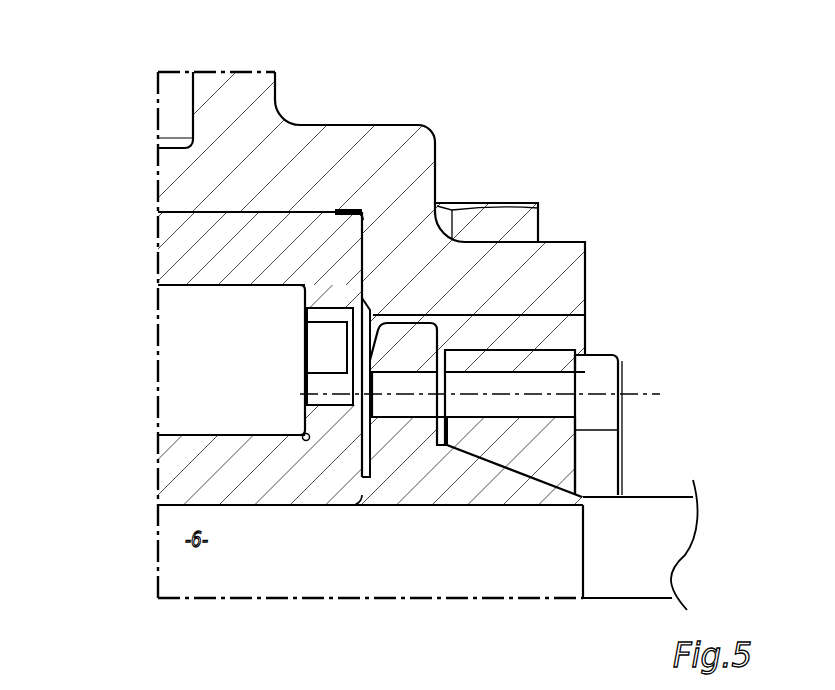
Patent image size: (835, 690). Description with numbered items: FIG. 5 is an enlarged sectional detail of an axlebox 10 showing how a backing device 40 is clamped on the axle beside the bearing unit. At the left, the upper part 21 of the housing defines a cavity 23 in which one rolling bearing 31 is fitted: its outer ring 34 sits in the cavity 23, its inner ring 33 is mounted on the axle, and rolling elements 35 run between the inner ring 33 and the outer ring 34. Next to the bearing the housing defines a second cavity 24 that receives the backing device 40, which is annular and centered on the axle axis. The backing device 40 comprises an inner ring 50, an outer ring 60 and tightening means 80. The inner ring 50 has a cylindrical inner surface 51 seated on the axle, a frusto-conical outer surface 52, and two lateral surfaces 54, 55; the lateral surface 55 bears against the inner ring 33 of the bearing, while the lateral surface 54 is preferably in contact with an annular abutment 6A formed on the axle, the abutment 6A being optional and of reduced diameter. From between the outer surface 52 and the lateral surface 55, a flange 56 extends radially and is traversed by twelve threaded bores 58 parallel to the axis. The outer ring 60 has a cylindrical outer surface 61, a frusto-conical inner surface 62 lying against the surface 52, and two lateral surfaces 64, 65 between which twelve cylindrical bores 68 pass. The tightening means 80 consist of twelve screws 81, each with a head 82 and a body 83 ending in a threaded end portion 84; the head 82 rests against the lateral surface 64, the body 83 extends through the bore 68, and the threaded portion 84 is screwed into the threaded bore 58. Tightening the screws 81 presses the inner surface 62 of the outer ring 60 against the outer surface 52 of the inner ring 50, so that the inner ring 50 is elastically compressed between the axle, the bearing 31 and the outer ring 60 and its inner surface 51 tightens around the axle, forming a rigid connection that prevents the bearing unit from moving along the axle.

The axlebox 10 is at (143, 106).
The upper part 21 is at (263, 132).
The cavity 23 is at (211, 215).
The outer ring 34 is at (175, 230).
The rolling elements 35 is at (188, 398).
The inner ring 33 is at (188, 468).
The rolling bearing 31 is at (142, 353).
The threaded end portion 84 is at (390, 407).
The flange 56 is at (398, 340).
The threaded bore 58 is at (418, 404).
The cylindrical bore 68 is at (487, 407).
The cavity 24 is at (494, 324).
The outer ring 60 is at (548, 360).
The cylindrical outer surface 61 is at (535, 336).
The body 83 is at (553, 380).
The head 82 is at (598, 372).
The screw 81 is at (664, 373).
The tightening means 80 is at (659, 286).
The backing device 40 is at (710, 312).
The lateral surface 64 is at (582, 440).
The frusto-conical outer surface 52 is at (566, 475).
The lateral surface 65 is at (432, 441).
The frusto-conical inner surface 62 is at (533, 486).
The inner ring 50 is at (460, 483).
The cylindrical inner surface 51 is at (563, 513).
The lateral surface 55 is at (355, 488).
The lateral surface 54 is at (595, 503).
The abutment 6A is at (655, 583).